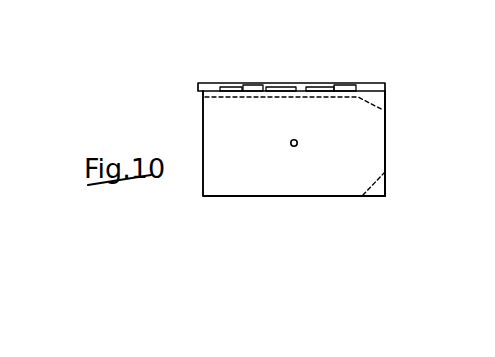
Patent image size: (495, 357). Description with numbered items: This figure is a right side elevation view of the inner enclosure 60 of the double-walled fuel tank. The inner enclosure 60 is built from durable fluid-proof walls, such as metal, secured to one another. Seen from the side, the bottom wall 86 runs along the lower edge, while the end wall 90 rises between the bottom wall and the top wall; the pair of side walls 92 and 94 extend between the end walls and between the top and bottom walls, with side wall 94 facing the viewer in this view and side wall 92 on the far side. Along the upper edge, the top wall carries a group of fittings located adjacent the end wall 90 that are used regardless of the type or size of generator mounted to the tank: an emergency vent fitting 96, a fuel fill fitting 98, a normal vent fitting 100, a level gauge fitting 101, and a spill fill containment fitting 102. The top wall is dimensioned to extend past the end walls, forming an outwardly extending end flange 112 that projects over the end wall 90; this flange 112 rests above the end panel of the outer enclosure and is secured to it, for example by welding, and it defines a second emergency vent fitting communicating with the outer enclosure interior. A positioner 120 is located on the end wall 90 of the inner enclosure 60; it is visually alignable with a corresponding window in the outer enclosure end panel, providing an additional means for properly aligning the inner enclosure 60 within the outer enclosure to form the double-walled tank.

The inner enclosure 60 is at (201, 208).
The bottom wall 86 is at (337, 197).
The end wall 90 is at (287, 180).
The side wall 92 is at (195, 139).
The side wall 94 is at (386, 140).
The emergency vent fitting 96 is at (221, 86).
The fuel fill fitting 98 is at (318, 88).
The normal vent fitting 100 is at (254, 88).
The level gauge fitting 101 is at (284, 86).
The spill fill containment fitting 102 is at (346, 88).
The end flange 112 is at (396, 82).
The positioner 120 is at (301, 133).